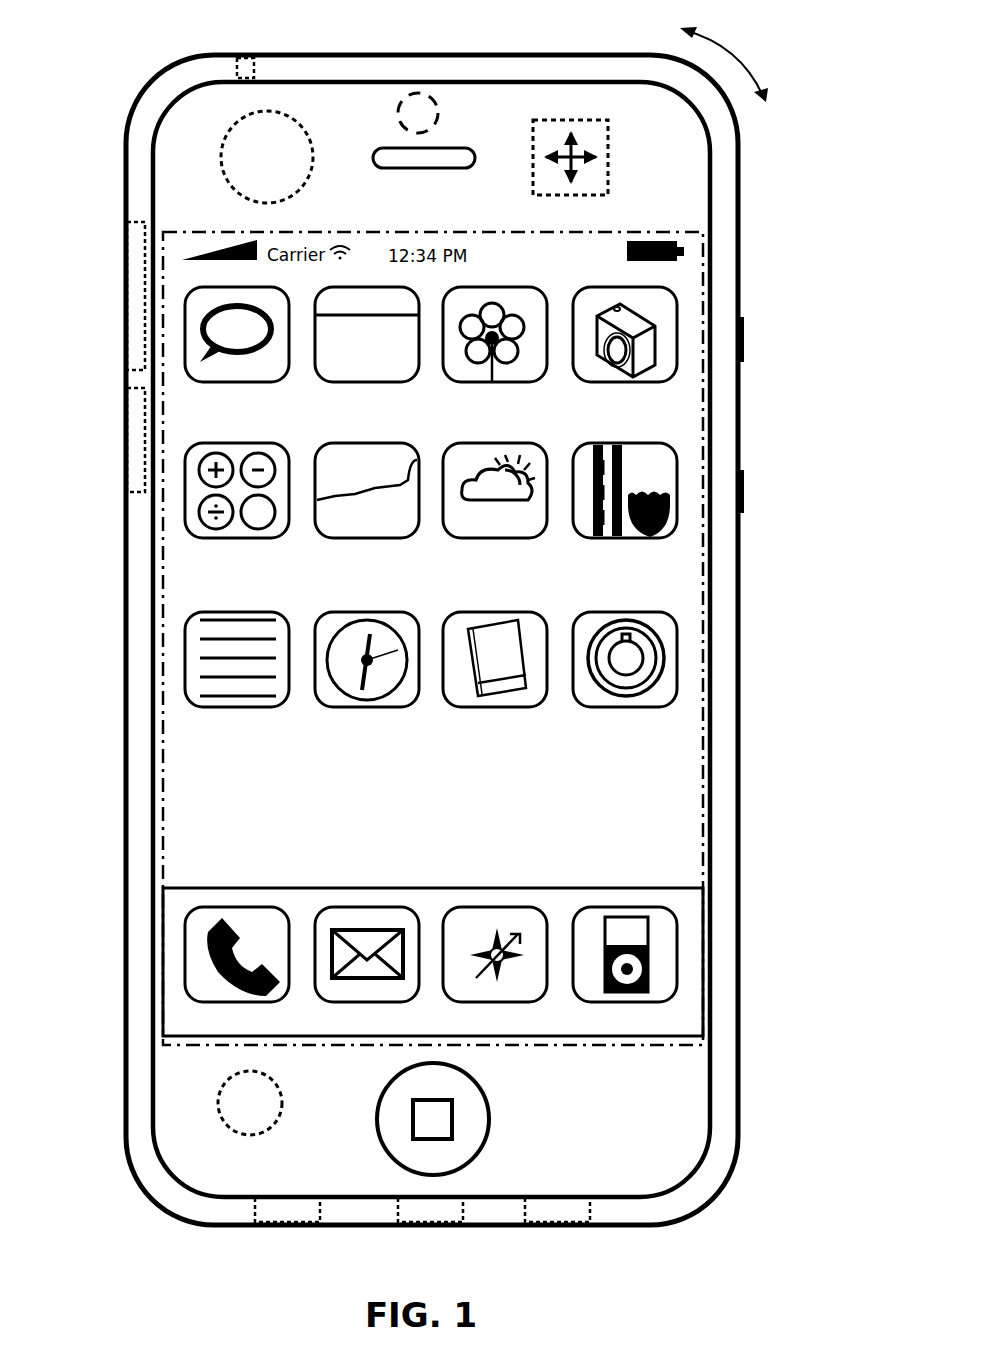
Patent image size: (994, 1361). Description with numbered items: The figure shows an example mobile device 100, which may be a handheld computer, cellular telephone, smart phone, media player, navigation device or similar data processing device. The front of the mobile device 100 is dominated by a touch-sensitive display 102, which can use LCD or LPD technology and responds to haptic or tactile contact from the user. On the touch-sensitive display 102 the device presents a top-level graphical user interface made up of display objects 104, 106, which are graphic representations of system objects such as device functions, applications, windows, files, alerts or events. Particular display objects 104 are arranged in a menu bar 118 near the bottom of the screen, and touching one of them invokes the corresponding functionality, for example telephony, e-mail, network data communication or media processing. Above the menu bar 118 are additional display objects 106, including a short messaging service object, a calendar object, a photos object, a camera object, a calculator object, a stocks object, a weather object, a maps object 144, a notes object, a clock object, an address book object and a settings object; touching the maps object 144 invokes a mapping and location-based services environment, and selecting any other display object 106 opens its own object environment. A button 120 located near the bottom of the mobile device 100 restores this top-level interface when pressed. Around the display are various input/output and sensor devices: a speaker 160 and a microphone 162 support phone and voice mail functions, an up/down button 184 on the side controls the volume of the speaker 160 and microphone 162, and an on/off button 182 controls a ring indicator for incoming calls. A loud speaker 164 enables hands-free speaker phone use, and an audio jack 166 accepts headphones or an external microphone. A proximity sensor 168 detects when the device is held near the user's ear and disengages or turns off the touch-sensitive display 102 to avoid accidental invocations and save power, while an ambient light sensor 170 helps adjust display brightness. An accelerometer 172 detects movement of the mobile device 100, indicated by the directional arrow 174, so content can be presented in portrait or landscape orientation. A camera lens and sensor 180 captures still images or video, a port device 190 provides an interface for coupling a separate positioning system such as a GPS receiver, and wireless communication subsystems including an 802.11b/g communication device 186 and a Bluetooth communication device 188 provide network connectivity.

The mobile device 100 is at (520, 55).
The touch-sensitive display 102 is at (636, 232).
The display objects 104 is at (690, 905).
The display objects 106 is at (640, 760).
The menu bar 118 is at (578, 1045).
The button 120 is at (490, 1119).
The maps object 144 is at (672, 540).
The speaker 160 is at (398, 168).
The microphone 162 is at (323, 1210).
The loud speaker 164 is at (590, 1210).
The audio jack 166 is at (254, 68).
The proximity sensor 168 is at (222, 170).
The ambient light sensor 170 is at (268, 1128).
The accelerometer 172 is at (608, 163).
The directional arrow 174 is at (750, 60).
The camera lens and sensor 180 is at (440, 115).
The on/off button 182 is at (744, 340).
The up/down button 184 is at (744, 490).
The 802.11b/g communication device 186 is at (127, 222).
The Bluetooth communication device 188 is at (127, 388).
The port device 190 is at (465, 1210).